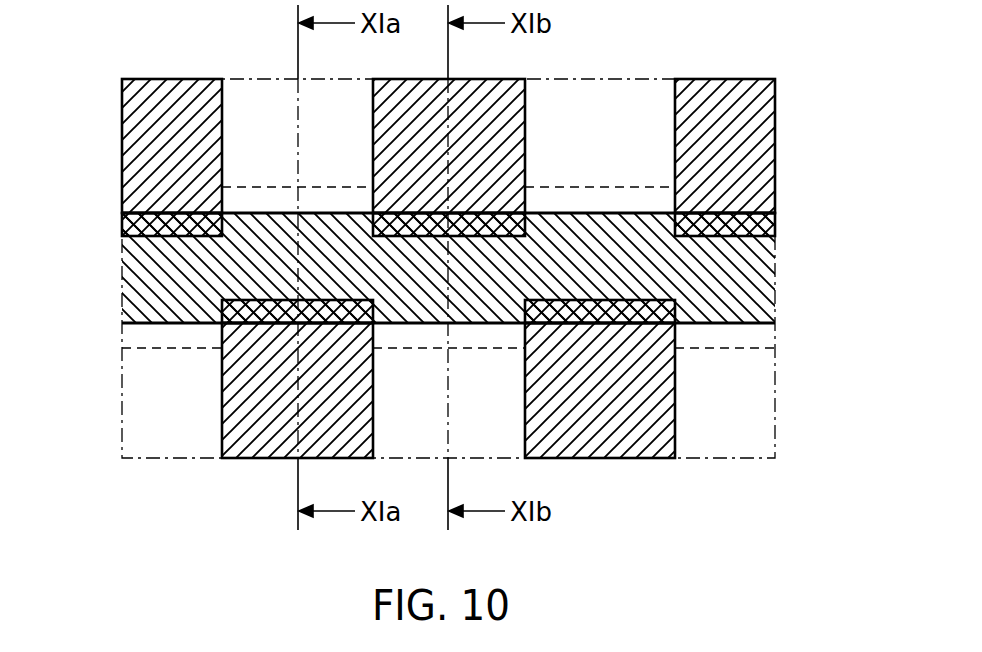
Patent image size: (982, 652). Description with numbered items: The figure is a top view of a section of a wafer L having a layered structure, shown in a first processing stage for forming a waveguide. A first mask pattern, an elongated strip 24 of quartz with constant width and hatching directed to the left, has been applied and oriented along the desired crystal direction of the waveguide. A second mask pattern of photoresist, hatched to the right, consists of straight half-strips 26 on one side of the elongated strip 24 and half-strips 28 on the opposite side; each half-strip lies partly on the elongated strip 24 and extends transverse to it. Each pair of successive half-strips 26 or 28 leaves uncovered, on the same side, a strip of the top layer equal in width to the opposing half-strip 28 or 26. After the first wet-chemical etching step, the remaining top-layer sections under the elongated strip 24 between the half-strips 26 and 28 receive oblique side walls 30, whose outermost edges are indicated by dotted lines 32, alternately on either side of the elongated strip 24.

The elongated strip 24 is at (725, 250).
The half-strips 26 is at (173, 152).
The half-strips 28 is at (247, 393).
The oblique side walls 30 is at (267, 198).
The dotted lines 32 is at (285, 188).
The wafer L is at (778, 425).